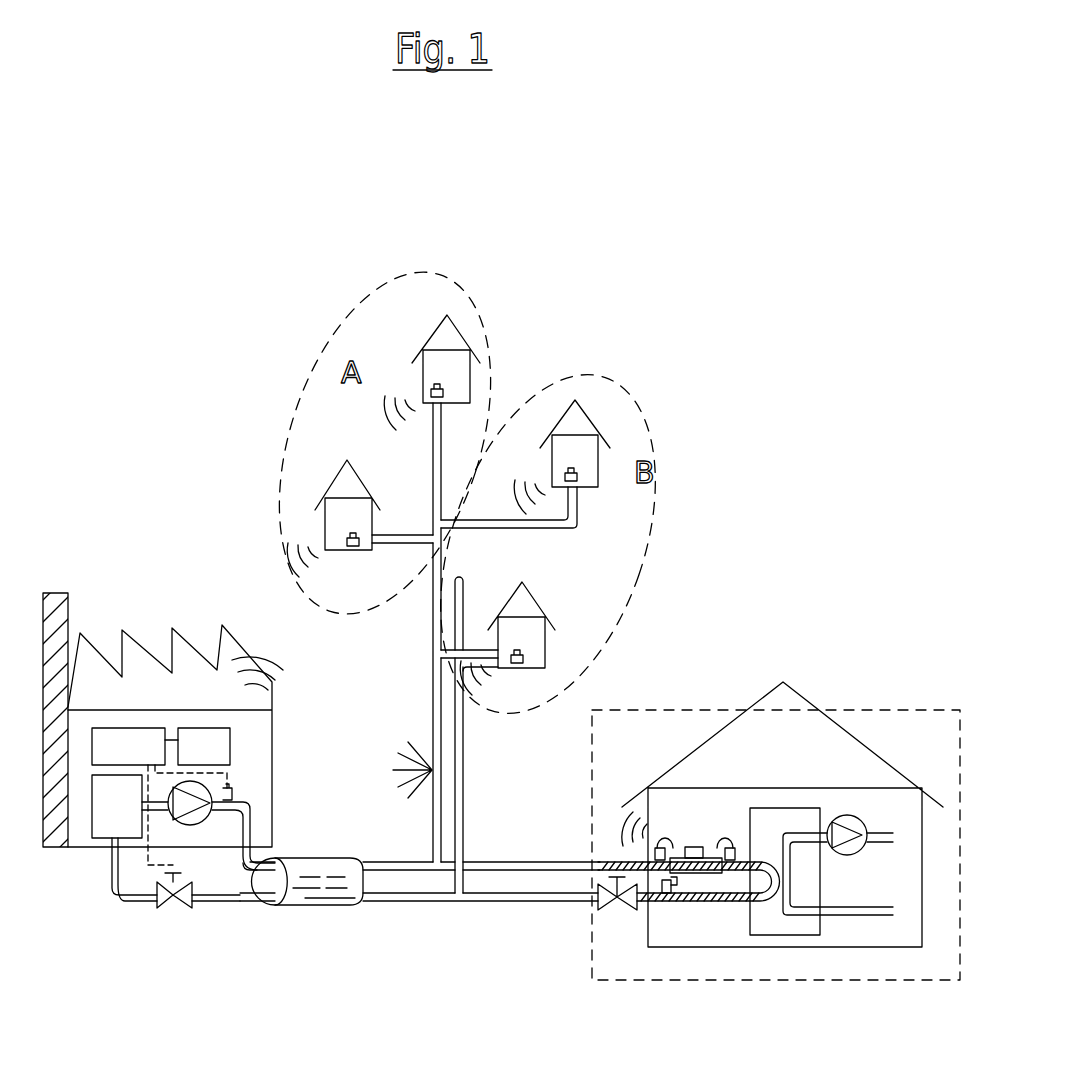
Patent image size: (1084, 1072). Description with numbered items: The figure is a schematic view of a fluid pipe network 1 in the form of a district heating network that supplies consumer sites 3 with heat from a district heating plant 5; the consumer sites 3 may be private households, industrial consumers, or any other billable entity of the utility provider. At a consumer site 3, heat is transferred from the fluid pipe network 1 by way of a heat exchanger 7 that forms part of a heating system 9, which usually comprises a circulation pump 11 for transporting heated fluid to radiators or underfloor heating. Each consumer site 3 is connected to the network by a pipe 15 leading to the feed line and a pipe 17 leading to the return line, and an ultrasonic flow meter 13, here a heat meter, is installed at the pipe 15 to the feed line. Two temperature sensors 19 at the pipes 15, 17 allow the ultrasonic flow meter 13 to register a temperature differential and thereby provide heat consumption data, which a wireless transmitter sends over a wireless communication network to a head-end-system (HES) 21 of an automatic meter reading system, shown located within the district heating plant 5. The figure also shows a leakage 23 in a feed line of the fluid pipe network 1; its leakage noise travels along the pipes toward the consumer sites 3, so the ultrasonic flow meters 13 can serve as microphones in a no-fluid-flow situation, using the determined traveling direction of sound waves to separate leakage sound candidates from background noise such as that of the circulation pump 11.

The fluid pipe network 1 is at (265, 283).
The consumer site 3 is at (482, 328).
The district heating plant 5 is at (130, 603).
The heat exchanger 7 is at (797, 937).
The heating system 9 is at (856, 917).
The circulation pump 11 is at (848, 813).
The ultrasonic flow meter 13 is at (697, 840).
The pipe connecting to feed line 15 is at (598, 860).
The pipe connecting to return line 17 is at (637, 908).
The temperature sensor 19 is at (655, 876).
The head-end-system (HES) 21 is at (198, 728).
The leakage 23 is at (410, 728).